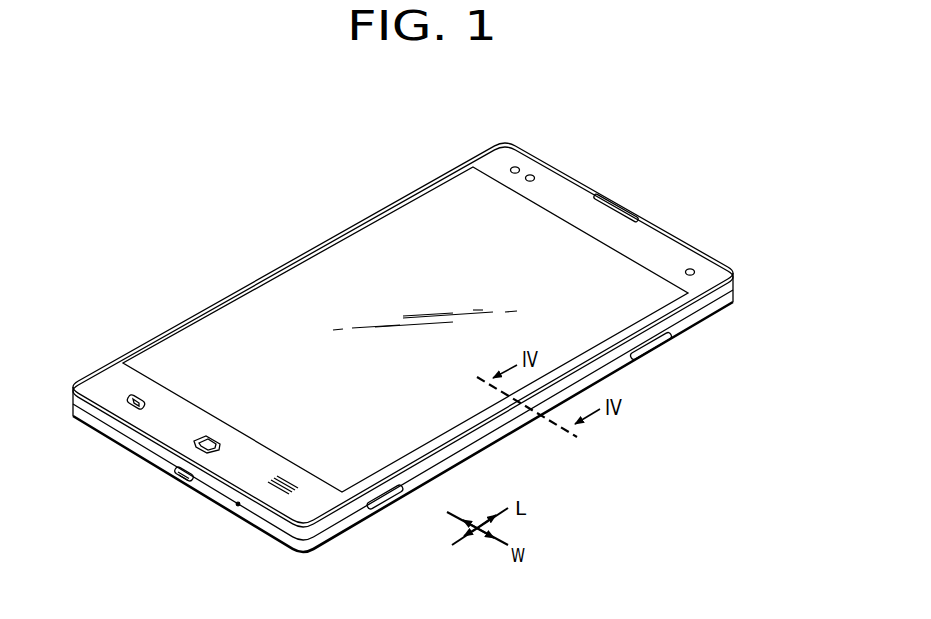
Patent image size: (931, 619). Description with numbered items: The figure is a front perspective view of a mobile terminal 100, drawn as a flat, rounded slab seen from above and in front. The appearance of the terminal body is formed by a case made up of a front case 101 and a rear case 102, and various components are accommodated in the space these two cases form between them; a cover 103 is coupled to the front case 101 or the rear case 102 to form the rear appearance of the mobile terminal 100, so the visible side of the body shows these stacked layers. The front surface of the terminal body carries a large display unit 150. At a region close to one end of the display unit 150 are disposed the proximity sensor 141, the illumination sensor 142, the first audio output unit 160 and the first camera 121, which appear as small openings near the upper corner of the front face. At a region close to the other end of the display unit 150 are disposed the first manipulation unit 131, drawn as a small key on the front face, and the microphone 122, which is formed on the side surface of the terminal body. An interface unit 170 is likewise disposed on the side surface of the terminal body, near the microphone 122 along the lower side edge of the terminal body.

The mobile terminal 100 is at (236, 201).
The front case 101 is at (737, 282).
The rear case 102 is at (728, 297).
The cover 103 is at (727, 312).
The display unit 150 is at (352, 244).
The proximity sensor 141 is at (531, 175).
The illumination sensor 142 is at (515, 166).
The first camera 121 is at (695, 272).
The first audio output unit 160 is at (618, 205).
The first manipulation unit 131 is at (128, 393).
The interface unit 170 is at (177, 481).
The microphone 122 is at (236, 506).